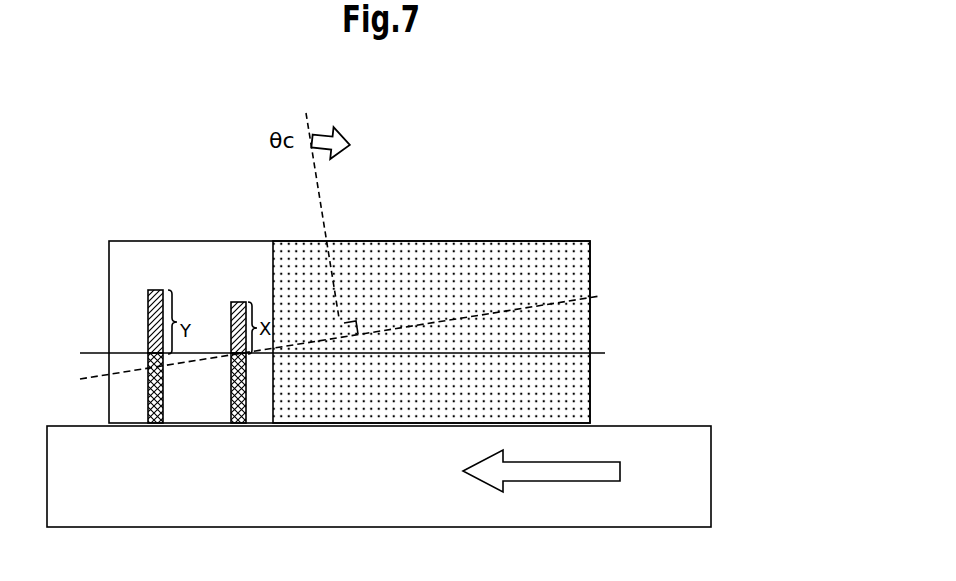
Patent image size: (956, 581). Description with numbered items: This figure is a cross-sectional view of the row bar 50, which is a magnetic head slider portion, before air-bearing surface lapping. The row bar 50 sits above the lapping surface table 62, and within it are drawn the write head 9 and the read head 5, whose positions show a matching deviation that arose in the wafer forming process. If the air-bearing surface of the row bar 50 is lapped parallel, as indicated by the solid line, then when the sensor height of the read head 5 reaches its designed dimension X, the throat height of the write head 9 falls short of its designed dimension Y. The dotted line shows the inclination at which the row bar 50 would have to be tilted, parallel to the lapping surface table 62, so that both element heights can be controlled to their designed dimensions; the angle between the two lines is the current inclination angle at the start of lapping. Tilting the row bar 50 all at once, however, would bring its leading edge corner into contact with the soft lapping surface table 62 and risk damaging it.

The row bar 50 is at (557, 240).
The lapping surface table 62 is at (649, 436).
The write head 9 is at (148, 402).
The read head 5 is at (231, 402).